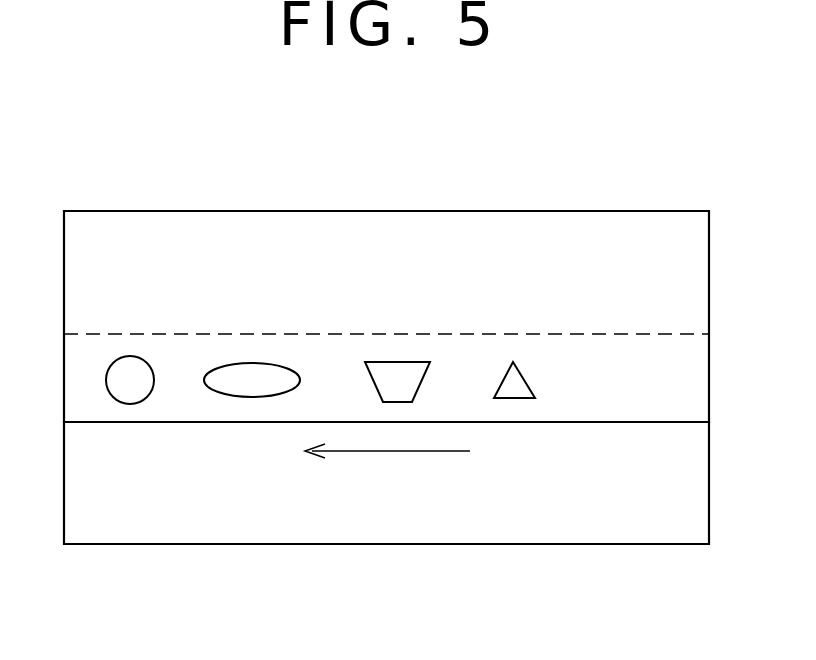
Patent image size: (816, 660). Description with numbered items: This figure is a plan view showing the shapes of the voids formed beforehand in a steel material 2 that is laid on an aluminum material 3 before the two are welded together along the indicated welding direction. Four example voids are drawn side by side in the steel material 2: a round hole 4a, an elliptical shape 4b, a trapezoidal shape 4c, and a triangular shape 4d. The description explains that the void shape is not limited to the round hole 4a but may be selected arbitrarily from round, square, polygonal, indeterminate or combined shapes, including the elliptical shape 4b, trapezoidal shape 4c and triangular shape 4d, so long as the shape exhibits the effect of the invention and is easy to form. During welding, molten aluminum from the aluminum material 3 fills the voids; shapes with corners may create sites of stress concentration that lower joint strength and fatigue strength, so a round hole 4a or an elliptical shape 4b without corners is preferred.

The steel material 2 is at (634, 240).
The aluminum material 3 is at (635, 522).
The round hole 4a is at (125, 370).
The elliptical shape 4b is at (253, 369).
The trapezoidal shape 4c is at (393, 373).
The triangular shape 4d is at (510, 377).